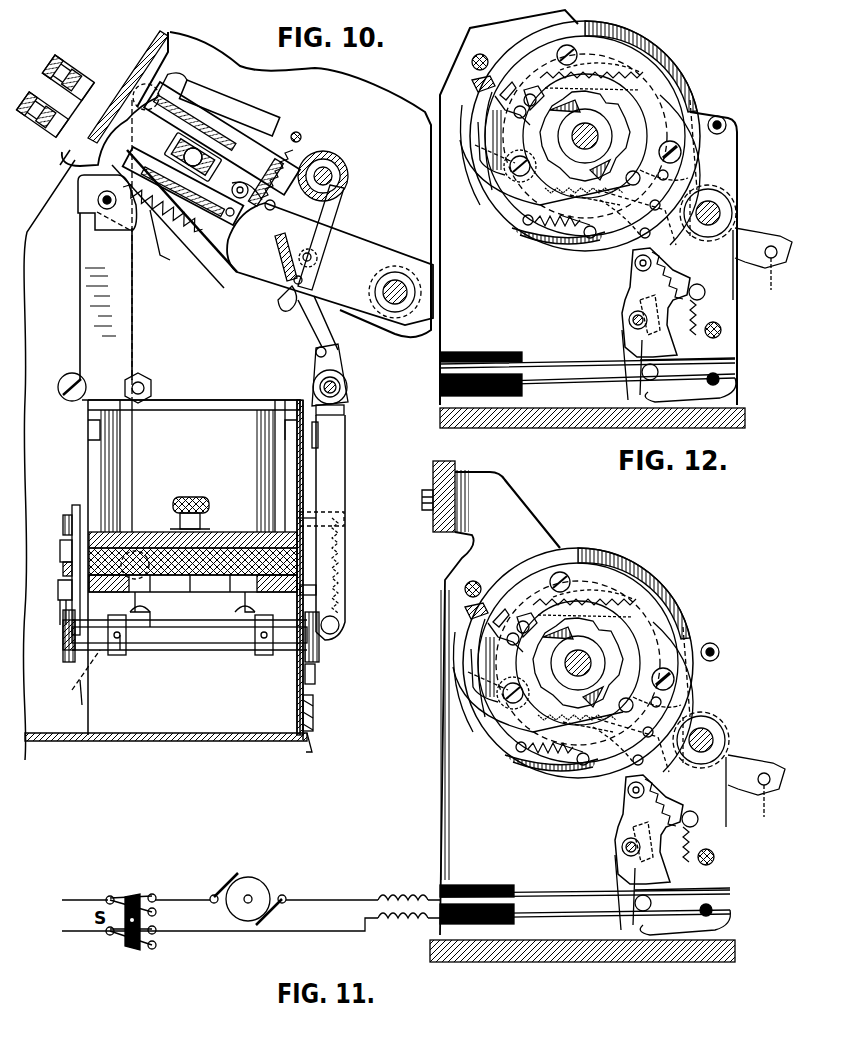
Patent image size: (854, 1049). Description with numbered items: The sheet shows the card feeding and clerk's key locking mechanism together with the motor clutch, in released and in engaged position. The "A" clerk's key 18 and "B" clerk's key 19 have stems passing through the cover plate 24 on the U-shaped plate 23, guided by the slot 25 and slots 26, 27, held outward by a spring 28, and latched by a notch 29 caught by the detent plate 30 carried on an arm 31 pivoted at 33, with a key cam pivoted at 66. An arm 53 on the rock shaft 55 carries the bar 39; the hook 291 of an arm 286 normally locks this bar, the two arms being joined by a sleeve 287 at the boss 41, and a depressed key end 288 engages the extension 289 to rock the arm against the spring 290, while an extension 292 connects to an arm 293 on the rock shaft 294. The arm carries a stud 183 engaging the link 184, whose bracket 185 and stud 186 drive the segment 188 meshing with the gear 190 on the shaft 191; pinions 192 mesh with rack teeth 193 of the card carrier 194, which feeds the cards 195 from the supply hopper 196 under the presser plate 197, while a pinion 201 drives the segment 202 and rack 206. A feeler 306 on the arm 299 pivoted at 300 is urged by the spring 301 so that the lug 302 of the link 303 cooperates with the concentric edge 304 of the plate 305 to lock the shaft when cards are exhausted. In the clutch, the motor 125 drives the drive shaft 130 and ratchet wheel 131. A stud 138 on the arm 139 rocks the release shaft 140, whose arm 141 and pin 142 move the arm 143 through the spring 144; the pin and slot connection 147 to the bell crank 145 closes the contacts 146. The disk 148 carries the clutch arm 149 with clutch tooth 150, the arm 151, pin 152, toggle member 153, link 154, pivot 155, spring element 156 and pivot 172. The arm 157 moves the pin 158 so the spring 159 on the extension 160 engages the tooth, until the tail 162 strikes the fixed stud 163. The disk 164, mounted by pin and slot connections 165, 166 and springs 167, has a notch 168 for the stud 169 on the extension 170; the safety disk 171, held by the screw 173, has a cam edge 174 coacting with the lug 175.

In FIG. 10, the "A" clerk's key 18 is at (55, 61).
In FIG. 10, the "B" clerk's key 19 is at (36, 105).
In FIG. 10, the U-shaped plate 23 is at (112, 0).
In FIG. 10, the transverse cover plate 24 is at (142, 75).
In FIG. 10, the slot 25 is at (223, 82).
In FIG. 10, the slot 26 is at (202, 68).
In FIG. 10, the slot 27 is at (112, 158).
In FIG. 10, the spring 28 is at (211, 228).
In FIG. 10, the notch 29 is at (236, 172).
In FIG. 10, the detent plate 30 is at (290, 122).
In FIG. 10, the arm 31 is at (243, 76).
In FIG. 10, the pivot 33 is at (175, 71).
In FIG. 10, the bar 39 is at (280, 262).
In FIG. 10, the boss 41 is at (338, 166).
In FIG. 10, the arm 53 is at (160, 225).
In FIG. 10, the rock shaft 55 is at (396, 270).
In FIG. 10, the pivot 66 is at (225, 240).
In FIG. 10, the stud 183 is at (100, 208).
In FIG. 10, the link 184 is at (135, 352).
In FIG. 10, the bracket 185 is at (74, 505).
In FIG. 10, the stud 186 is at (70, 540).
In FIG. 10, the segment 188 is at (70, 588).
In FIG. 10, the gear 190 is at (64, 640).
In FIG. 10, the shaft 191 is at (180, 645).
In FIG. 10, the pinion 192 is at (118, 658).
In FIG. 10, the rack teeth 193 is at (235, 650).
In FIG. 10, the card carrier 194 is at (200, 566).
In FIG. 10, the cards 195 is at (135, 560).
In FIG. 10, the supply hopper 196 is at (192, 570).
In FIG. 10, the presser plate 197 is at (160, 530).
In FIG. 10, the pinion 201 is at (320, 655).
In FIG. 10, the segment 202 is at (318, 673).
In FIG. 10, the rack 206 is at (315, 712).
In FIG. 10, the arm 286 is at (330, 226).
In FIG. 10, the sleeve 287 is at (348, 177).
In FIG. 10, the end 288 is at (266, 212).
In FIG. 10, the extension 289 is at (300, 250).
In FIG. 10, the spring 290 is at (300, 150).
In FIG. 10, the hook 291 is at (286, 302).
In FIG. 10, the extension 292 is at (322, 318).
In FIG. 10, the arm 293 is at (340, 362).
In FIG. 10, the rock shaft 294 is at (346, 384).
In FIG. 10, the arm 299 is at (150, 634).
In FIG. 10, the pivot 300 is at (95, 655).
In FIG. 10, the spring 301 is at (340, 545).
In FIG. 10, the lug 302 is at (320, 440).
In FIG. 10, the link 303 is at (346, 488).
In FIG. 10, the concentric edge 304 is at (335, 425).
In FIG. 10, the plate 305 is at (345, 412).
In FIG. 10, the feeler 306 is at (310, 598).
In FIG. 11, the motor 125 is at (258, 895).
In FIG. 12, the drive shaft 130 is at (650, 118).
In FIG. 11, the drive shaft 130 is at (638, 649).
In FIG. 12, the ratchet wheel 131 is at (597, 132).
In FIG. 11, the ratchet wheel 131 is at (644, 659).
In FIG. 12, the stud 138 is at (777, 262).
In FIG. 11, the stud 138 is at (775, 795).
In FIG. 12, the arm 139 is at (735, 258).
In FIG. 11, the arm 139 is at (752, 791).
In FIG. 12, the release shaft 140 is at (720, 212).
In FIG. 11, the release shaft 140 is at (721, 740).
In FIG. 12, the arm 141 is at (706, 296).
In FIG. 11, the arm 141 is at (727, 836).
In FIG. 12, the pin 142 is at (722, 330).
In FIG. 11, the pin 142 is at (735, 853).
In FIG. 12, the arm 143 is at (636, 264).
In FIG. 11, the arm 143 is at (635, 802).
In FIG. 12, the spring 144 is at (645, 282).
In FIG. 11, the spring 144 is at (635, 829).
In FIG. 12, the bell crank 145 is at (640, 340).
In FIG. 11, the bell crank 145 is at (632, 868).
In FIG. 12, the contacts 146 is at (737, 368).
In FIG. 11, the contacts 146 is at (730, 902).
In FIG. 12, the pin and slot connection 147 is at (630, 322).
In FIG. 11, the pin and slot connection 147 is at (610, 852).
In FIG. 12, the disk 148 is at (640, 60).
In FIG. 11, the disk 148 is at (578, 619).
In FIG. 12, the clutch arm 149 is at (485, 128).
In FIG. 11, the clutch arm 149 is at (456, 675).
In FIG. 12, the clutch tooth 150 is at (478, 145).
In FIG. 11, the clutch tooth 150 is at (465, 696).
In FIG. 12, the arm 151 is at (520, 196).
In FIG. 11, the arm 151 is at (528, 699).
In FIG. 12, the pin 152 is at (590, 248).
In FIG. 11, the pin 152 is at (588, 768).
In FIG. 12, the toggle member 153 is at (718, 92).
In FIG. 11, the toggle member 153 is at (581, 656).
In FIG. 12, the link 154 is at (585, 136).
In FIG. 11, the link 154 is at (599, 657).
In FIG. 12, the pivot 155 is at (682, 152).
In FIG. 11, the pivot 155 is at (705, 677).
In FIG. 12, the spring element 156 is at (515, 85).
In FIG. 11, the spring element 156 is at (523, 585).
In FIG. 12, the arm 157 is at (610, 260).
In FIG. 11, the arm 157 is at (610, 786).
In FIG. 12, the pin 158 is at (565, 248).
In FIG. 11, the pin 158 is at (552, 774).
In FIG. 12, the spring 159 is at (540, 238).
In FIG. 11, the spring 159 is at (532, 773).
In FIG. 12, the extension 160 is at (522, 212).
In FIG. 11, the extension 160 is at (516, 758).
In FIG. 12, the tail 162 is at (478, 80).
In FIG. 11, the tail 162 is at (444, 620).
In FIG. 12, the fixed stud 163 is at (472, 58).
In FIG. 11, the fixed stud 163 is at (444, 588).
In FIG. 12, the disk 164 is at (665, 62).
In FIG. 11, the disk 164 is at (578, 647).
In FIG. 12, the pin and slot connection 165 is at (512, 80).
In FIG. 11, the pin and slot connection 165 is at (488, 592).
In FIG. 12, the pin and slot connection 166 is at (690, 185).
In FIG. 11, the pin and slot connection 166 is at (699, 672).
In FIG. 12, the spring 167 is at (612, 62).
In FIG. 11, the spring 167 is at (555, 673).
In FIG. 12, the notch 168 is at (722, 118).
In FIG. 11, the notch 168 is at (732, 646).
In FIG. 12, the stud 169 is at (727, 124).
In FIG. 11, the stud 169 is at (747, 655).
In FIG. 12, the extension 170 is at (705, 170).
In FIG. 11, the extension 170 is at (721, 697).
In FIG. 12, the safety disk 171 is at (652, 60).
In FIG. 11, the safety disk 171 is at (601, 565).
In FIG. 12, the pivot 172 is at (505, 170).
In FIG. 11, the pivot 172 is at (480, 693).
In FIG. 12, the screw 173 is at (572, 48).
In FIG. 11, the screw 173 is at (569, 554).
In FIG. 12, the cam edge 174 is at (606, 190).
In FIG. 11, the cam edge 174 is at (599, 717).
In FIG. 12, the lug 175 is at (580, 255).
In FIG. 11, the lug 175 is at (556, 777).